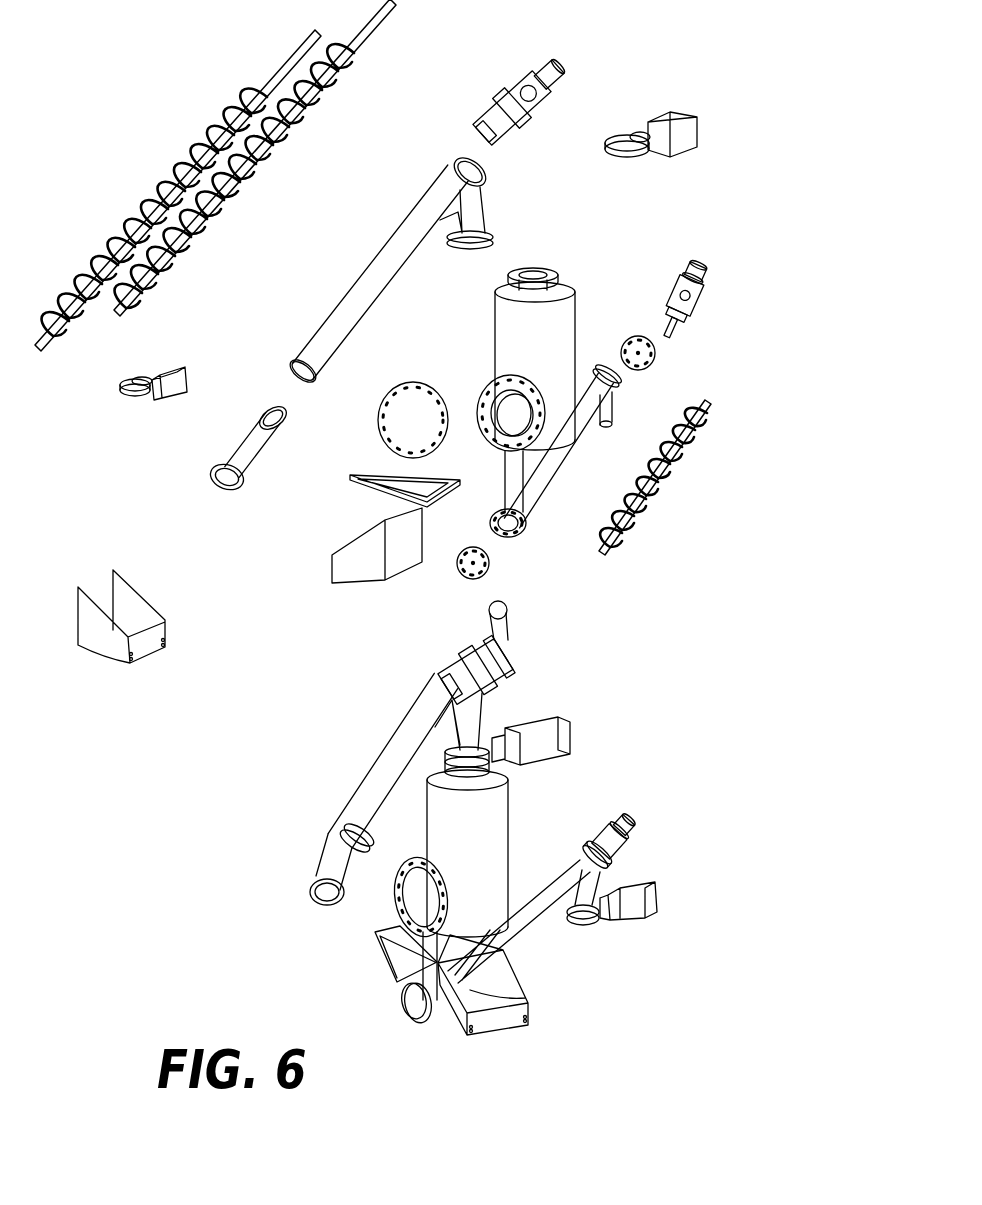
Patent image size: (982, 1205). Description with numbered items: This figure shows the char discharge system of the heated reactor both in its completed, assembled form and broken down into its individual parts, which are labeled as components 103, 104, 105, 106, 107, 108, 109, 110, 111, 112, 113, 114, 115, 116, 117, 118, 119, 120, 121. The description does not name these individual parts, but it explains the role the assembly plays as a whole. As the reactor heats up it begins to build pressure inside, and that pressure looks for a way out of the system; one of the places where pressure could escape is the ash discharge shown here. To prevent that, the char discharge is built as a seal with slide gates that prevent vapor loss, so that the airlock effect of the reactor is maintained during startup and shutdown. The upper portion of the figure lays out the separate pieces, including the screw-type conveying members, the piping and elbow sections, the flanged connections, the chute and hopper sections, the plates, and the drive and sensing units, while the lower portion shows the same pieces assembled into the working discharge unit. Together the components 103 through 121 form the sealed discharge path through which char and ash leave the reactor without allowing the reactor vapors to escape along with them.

The handle 103 is at (507, 612).
The valve 104 is at (500, 112).
The pipe 105 is at (475, 208).
The auger screw 106 is at (238, 180).
The auger screw 107 is at (182, 193).
The elbow pipe 108 is at (223, 487).
The cylinder 109 is at (560, 293).
The motor 110 is at (688, 112).
The flange 111 is at (507, 405).
The disk 112 is at (418, 392).
The pipe 113 is at (582, 423).
The disk 114 is at (642, 371).
The sensor 115 is at (693, 262).
The chute 116 is at (367, 572).
The auger screw 117 is at (673, 472).
The flange 118 is at (167, 638).
The disk 119 is at (490, 566).
The plate 120 is at (372, 487).
The motor 121 is at (178, 363).